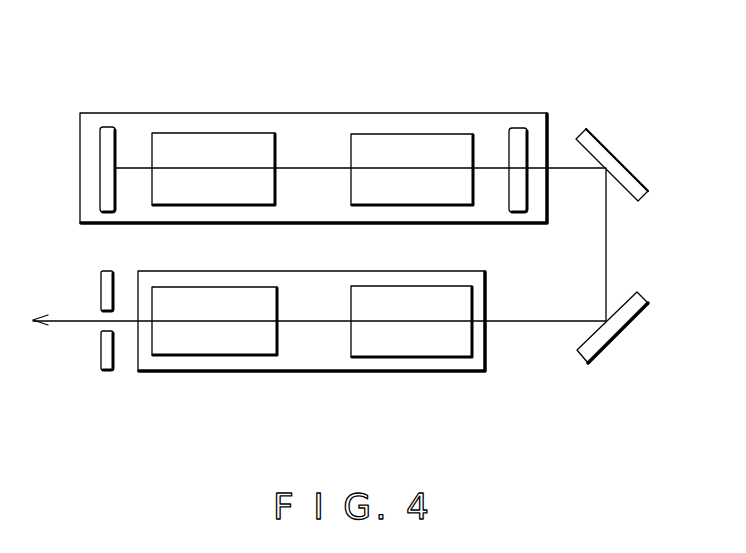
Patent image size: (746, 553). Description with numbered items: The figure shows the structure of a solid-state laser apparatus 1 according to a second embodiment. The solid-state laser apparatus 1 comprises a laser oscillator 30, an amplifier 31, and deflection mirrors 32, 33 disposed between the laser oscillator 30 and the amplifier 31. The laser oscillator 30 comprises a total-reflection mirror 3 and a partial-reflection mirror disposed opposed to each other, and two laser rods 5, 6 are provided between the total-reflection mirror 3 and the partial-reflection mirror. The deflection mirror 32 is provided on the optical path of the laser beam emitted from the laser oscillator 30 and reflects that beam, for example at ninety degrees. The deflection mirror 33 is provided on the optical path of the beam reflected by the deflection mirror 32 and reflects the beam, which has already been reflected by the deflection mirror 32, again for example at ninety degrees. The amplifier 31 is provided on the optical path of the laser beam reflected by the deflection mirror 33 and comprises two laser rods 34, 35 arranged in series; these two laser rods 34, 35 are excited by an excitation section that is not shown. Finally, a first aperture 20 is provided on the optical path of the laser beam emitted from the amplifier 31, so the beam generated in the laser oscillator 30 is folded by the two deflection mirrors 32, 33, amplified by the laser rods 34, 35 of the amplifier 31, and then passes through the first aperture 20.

The solid-state laser apparatus 1 is at (557, 88).
The total-reflection mirror 3 is at (103, 127).
The laser rod 5 is at (206, 133).
The laser rod 6 is at (410, 134).
The first aperture 20 is at (104, 372).
The laser oscillator 30 is at (315, 113).
The amplifier 31 is at (306, 372).
The deflection mirror 32 is at (612, 151).
The deflection mirror 33 is at (613, 338).
The laser rod 34 is at (413, 358).
The laser rod 35 is at (206, 357).